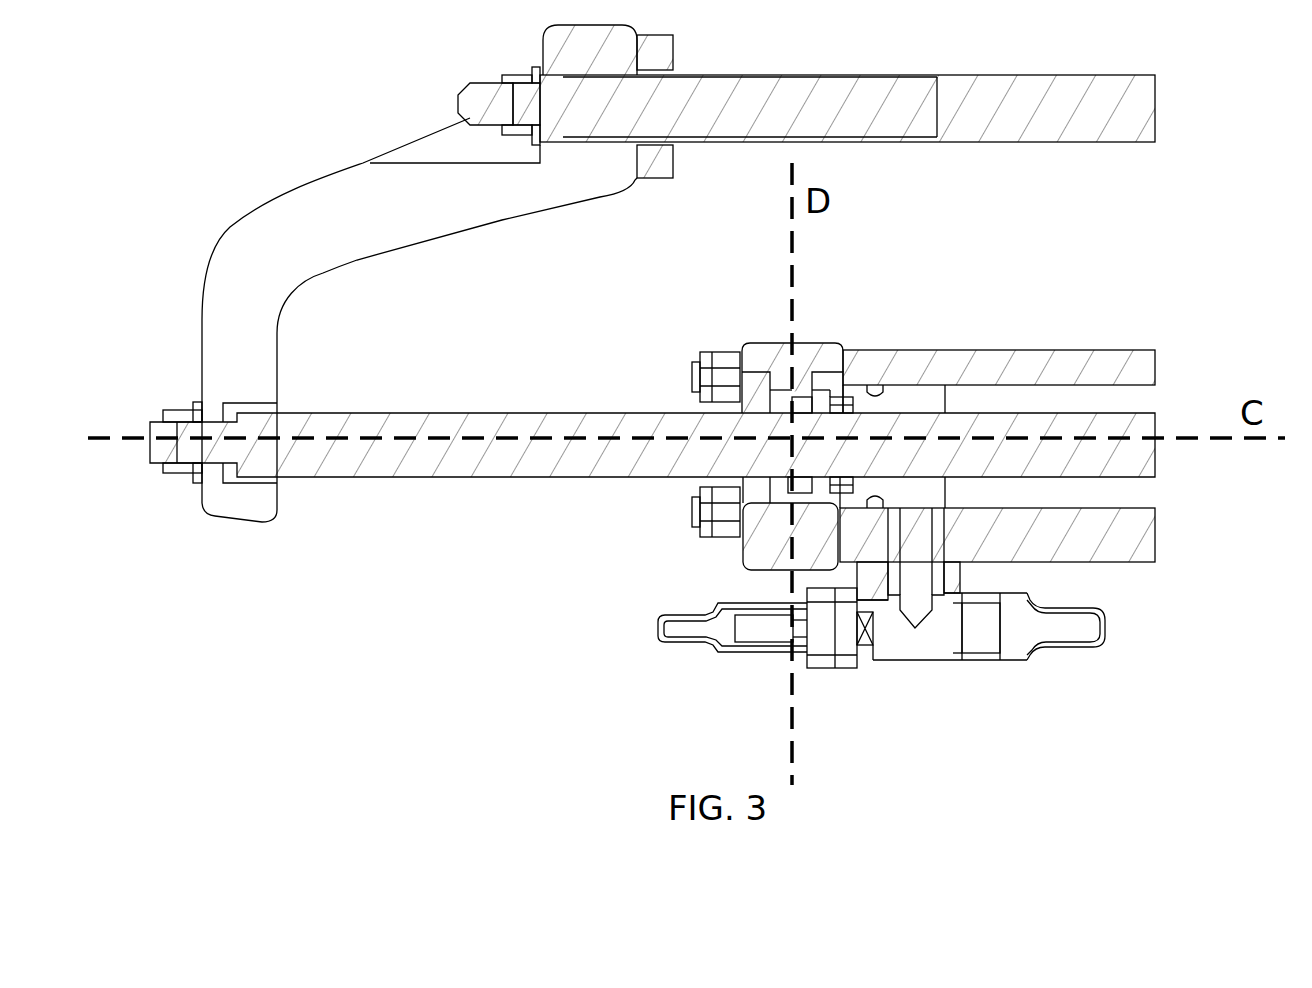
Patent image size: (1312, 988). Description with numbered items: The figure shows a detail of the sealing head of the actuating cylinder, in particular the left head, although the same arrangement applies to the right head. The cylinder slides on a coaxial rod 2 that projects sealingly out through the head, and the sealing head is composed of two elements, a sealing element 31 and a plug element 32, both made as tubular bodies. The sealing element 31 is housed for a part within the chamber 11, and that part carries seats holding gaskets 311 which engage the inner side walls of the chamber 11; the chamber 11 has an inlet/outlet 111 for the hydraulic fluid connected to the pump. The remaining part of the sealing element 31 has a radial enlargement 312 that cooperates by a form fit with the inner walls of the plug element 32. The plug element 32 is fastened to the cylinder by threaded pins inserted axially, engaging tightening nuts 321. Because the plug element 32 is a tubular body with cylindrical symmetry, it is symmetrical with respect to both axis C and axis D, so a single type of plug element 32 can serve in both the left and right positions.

The rod 2 is at (480, 470).
The chamber 11 is at (1146, 400).
The inlet/outlet 111 is at (878, 690).
The sealing element 31 is at (893, 490).
The gaskets 311 is at (877, 385).
The radial enlargement 312 is at (830, 372).
The plug element 32 is at (760, 355).
The tightening nuts 321 is at (668, 383).